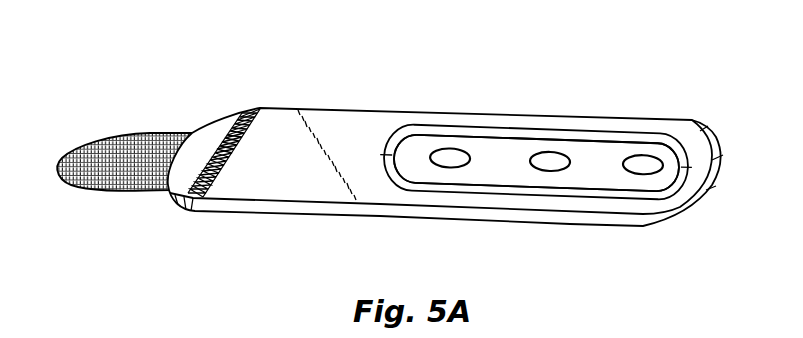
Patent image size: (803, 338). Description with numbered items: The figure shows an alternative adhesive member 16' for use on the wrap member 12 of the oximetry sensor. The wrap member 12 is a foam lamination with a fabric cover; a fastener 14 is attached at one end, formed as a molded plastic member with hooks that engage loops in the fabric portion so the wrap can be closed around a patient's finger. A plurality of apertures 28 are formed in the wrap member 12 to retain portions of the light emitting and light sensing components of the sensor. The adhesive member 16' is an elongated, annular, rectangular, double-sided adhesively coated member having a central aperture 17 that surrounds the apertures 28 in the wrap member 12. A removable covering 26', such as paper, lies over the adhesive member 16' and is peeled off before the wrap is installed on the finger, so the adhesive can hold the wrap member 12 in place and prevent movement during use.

The wrap member 12 is at (273, 125).
The fastener 14 is at (110, 134).
The adhesive member 16' is at (538, 108).
The central aperture 17 is at (512, 150).
The removable covering 26' is at (538, 111).
The apertures 28 is at (456, 156).